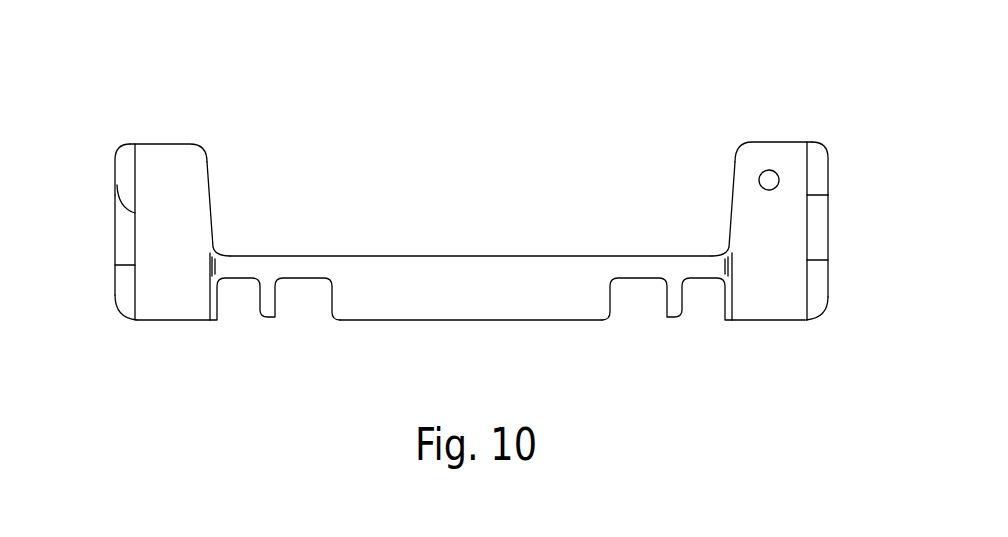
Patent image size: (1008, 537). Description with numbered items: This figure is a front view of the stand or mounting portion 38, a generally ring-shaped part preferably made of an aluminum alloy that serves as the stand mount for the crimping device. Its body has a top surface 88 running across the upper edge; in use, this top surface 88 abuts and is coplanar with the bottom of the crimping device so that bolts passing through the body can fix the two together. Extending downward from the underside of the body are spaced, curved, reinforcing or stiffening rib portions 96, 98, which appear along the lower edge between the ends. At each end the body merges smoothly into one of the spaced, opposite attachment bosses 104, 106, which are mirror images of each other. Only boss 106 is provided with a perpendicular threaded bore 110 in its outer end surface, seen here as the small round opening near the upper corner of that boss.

The stand or mounting portion 38 is at (237, 80).
The top surface 88 is at (450, 255).
The rib portion 96 is at (410, 297).
The rib portion 98 is at (633, 295).
The attachment boss 104 is at (212, 199).
The attachment boss 106 is at (730, 197).
The threaded bore 110 is at (763, 171).